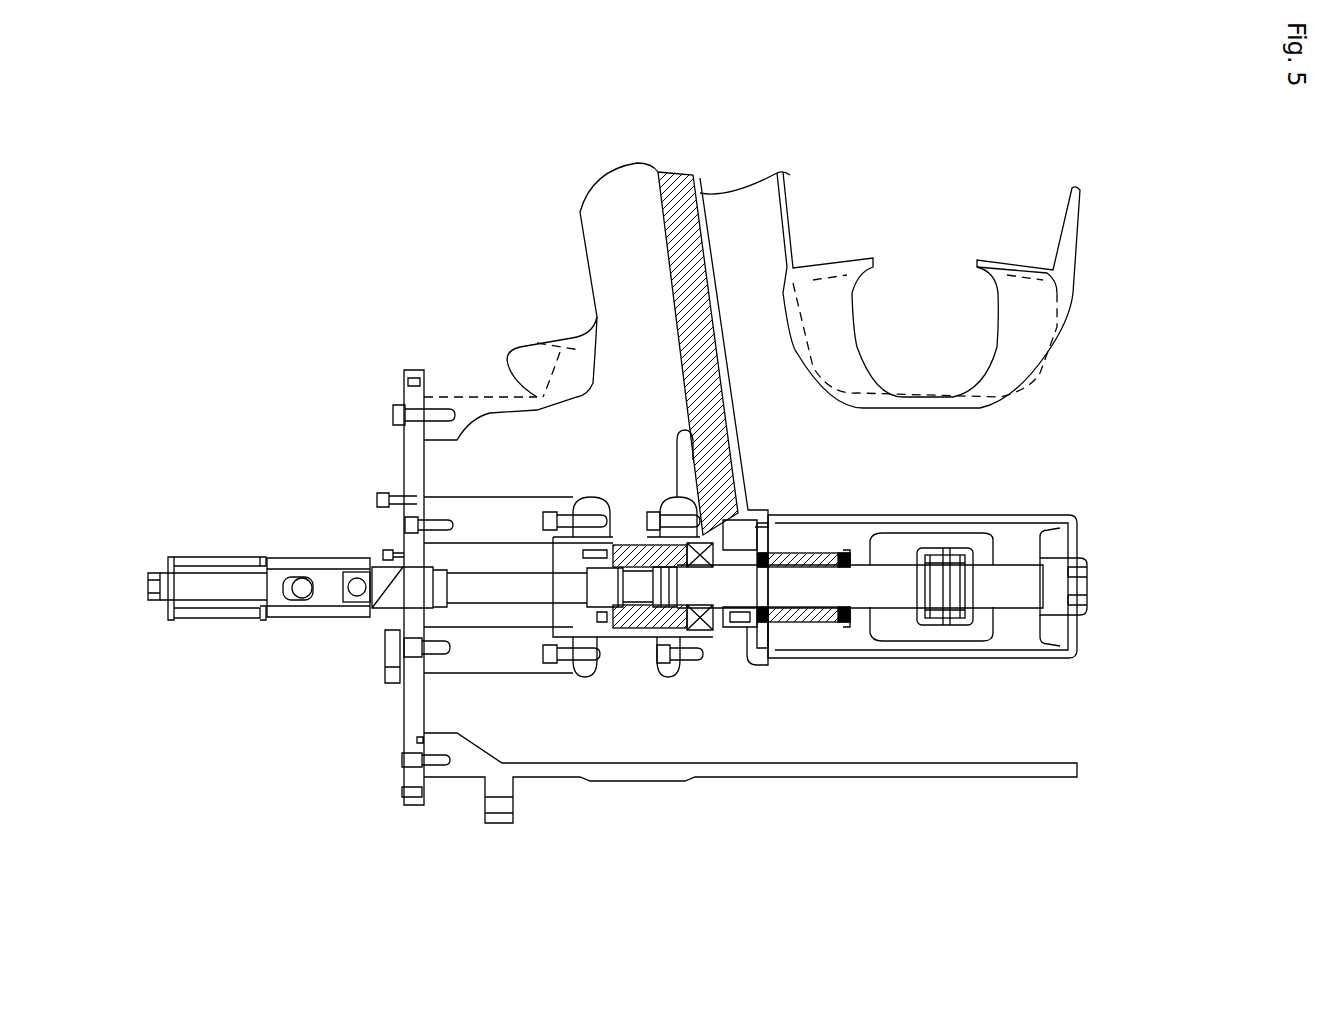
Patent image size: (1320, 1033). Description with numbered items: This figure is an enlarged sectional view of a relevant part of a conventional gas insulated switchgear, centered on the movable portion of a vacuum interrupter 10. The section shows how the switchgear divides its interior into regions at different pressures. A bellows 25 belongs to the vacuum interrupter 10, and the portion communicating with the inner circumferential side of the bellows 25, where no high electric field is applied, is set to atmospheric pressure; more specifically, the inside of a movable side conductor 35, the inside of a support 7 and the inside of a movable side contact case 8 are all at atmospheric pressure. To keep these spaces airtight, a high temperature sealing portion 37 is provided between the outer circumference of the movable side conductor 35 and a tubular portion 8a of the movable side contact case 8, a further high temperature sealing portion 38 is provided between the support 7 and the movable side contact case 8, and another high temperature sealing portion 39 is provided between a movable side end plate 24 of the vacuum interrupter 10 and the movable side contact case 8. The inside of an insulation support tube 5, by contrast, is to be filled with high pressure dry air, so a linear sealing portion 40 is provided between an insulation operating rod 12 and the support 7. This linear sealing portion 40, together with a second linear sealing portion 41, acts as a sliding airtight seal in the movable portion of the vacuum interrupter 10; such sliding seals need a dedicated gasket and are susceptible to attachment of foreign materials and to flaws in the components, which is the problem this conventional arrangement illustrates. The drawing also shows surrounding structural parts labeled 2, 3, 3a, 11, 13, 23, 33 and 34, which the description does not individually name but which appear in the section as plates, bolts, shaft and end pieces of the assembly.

The base plate 2 is at (915, 747).
The side plate 3 is at (403, 465).
The fixing bolt 3a is at (423, 637).
The insulation support tube 5 is at (477, 505).
The support 7 is at (617, 640).
The movable side contact case 8 is at (690, 657).
The tubular portion 8a is at (683, 440).
The vacuum interrupter 10 is at (1020, 515).
The shaft 11 is at (885, 600).
The insulation operating rod 12 is at (527, 580).
The end bracket 13 is at (1020, 607).
The end cap 23 is at (1080, 542).
The movable side end plate 24 is at (762, 627).
The bellows 25 is at (790, 563).
The bearing 33 is at (708, 630).
The adjusting rod 34 is at (175, 560).
The movable side conductor 35 is at (710, 230).
The high temperature sealing portion 37 is at (740, 445).
The high temperature sealing portion 38 is at (680, 640).
The high temperature sealing portion 39 is at (737, 630).
The linear sealing portion 40 is at (607, 563).
The linear sealing portion 41 is at (400, 583).